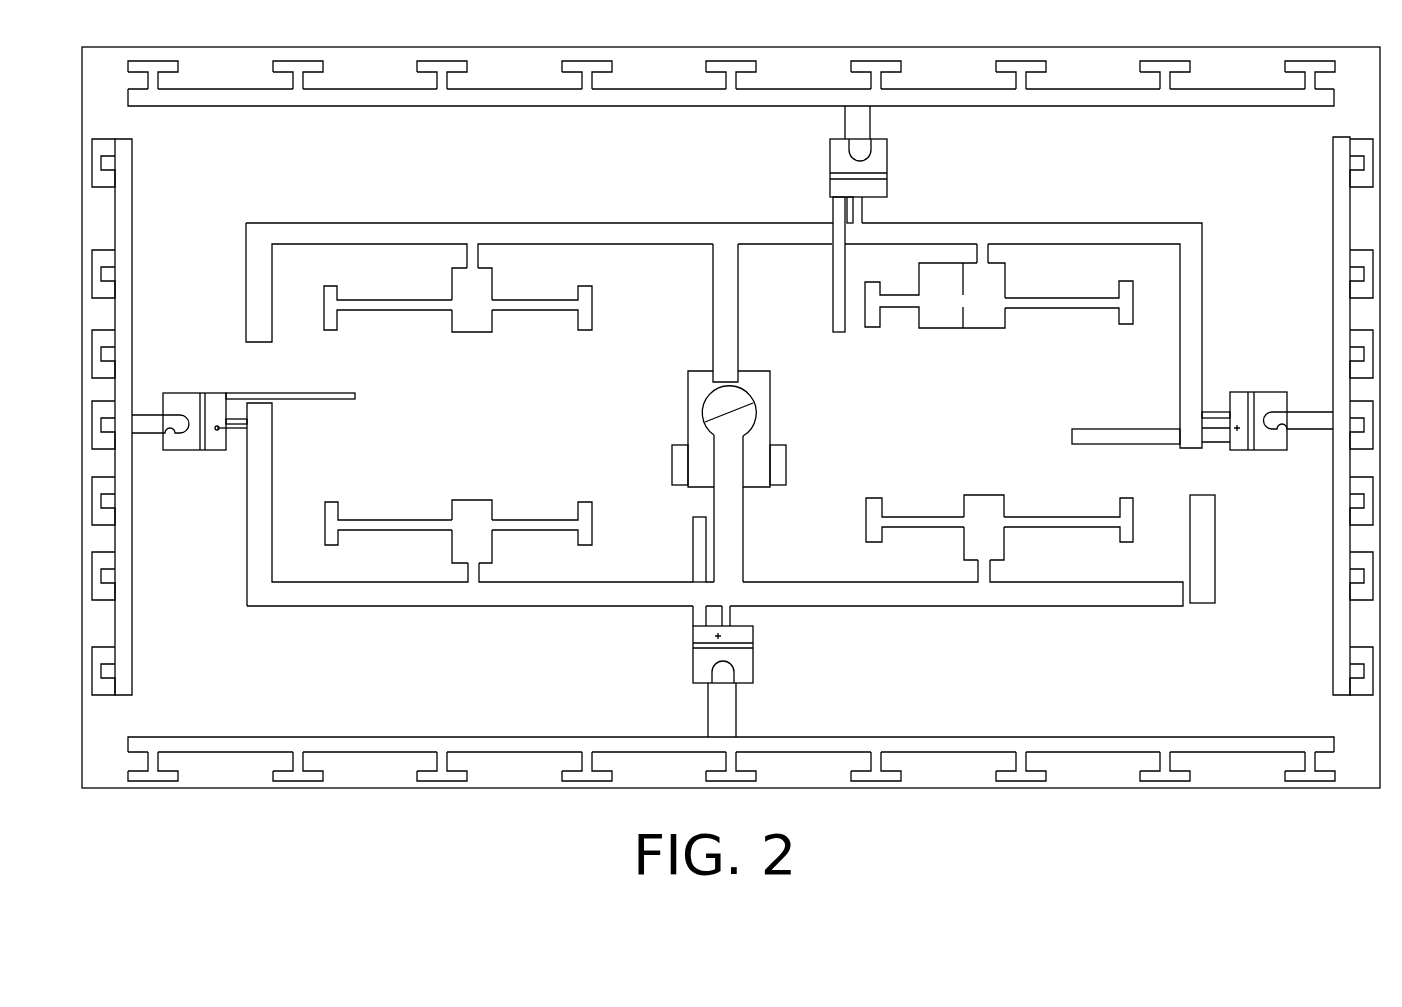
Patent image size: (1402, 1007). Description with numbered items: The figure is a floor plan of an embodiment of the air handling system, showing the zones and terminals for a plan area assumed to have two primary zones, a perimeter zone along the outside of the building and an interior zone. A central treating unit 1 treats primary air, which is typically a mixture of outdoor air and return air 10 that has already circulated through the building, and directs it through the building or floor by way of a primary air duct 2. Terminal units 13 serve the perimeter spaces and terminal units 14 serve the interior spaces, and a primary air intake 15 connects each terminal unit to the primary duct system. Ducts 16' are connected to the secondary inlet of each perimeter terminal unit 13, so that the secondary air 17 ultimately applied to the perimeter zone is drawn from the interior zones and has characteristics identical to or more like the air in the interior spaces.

The central treating unit 1 is at (757, 405).
The primary air duct 2 is at (713, 297).
The return air 10 is at (642, 466).
The terminal unit 13 is at (205, 450).
The terminal unit 14 is at (452, 332).
The primary air intake 15 is at (490, 263).
The duct 16' is at (728, 389).
The secondary air 17 is at (372, 393).